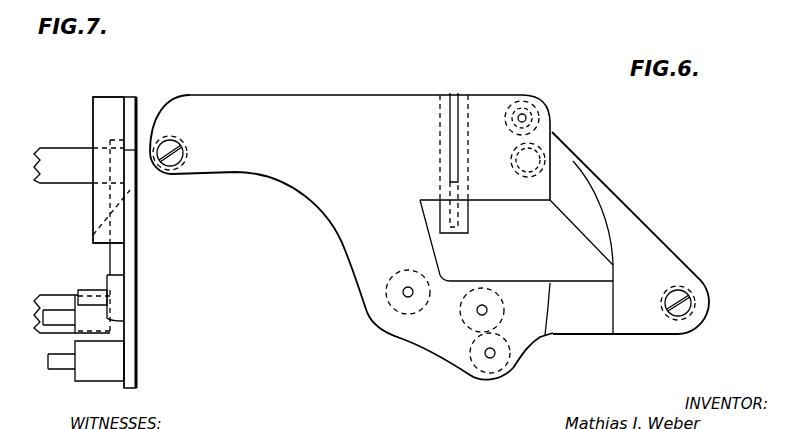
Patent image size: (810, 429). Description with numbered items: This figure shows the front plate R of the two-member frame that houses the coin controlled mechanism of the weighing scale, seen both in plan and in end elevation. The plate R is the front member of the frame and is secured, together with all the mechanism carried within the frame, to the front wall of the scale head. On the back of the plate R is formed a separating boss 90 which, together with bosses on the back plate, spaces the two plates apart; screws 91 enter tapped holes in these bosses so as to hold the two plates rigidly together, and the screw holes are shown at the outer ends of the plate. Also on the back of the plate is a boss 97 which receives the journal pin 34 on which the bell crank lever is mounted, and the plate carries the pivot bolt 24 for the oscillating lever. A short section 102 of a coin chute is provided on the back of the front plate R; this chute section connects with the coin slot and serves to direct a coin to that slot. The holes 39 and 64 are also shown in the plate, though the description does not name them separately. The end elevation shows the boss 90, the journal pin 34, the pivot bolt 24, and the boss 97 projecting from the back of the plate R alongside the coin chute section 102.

In FIG. 7, the front plate R is at (137, 264).
In FIG. 6, the front plate R is at (429, 237).
In FIG. 7, the short section of coin chute 102 is at (113, 108).
In FIG. 6, the short section of coin chute 102 is at (471, 223).
In FIG. 7, the separating boss 90 is at (67, 157).
In FIG. 6, the separating boss 90 is at (534, 159).
In FIG. 7, the screws 91 is at (55, 295).
In FIG. 7, the journal pin 34 is at (88, 288).
In FIG. 6, the journal pin 34 is at (405, 292).
In FIG. 7, the boss 97 is at (115, 303).
In FIG. 6, the boss 97 is at (386, 316).
In FIG. 7, the shaft / hole 39 is at (53, 327).
In FIG. 6, the shaft / hole 39 is at (478, 312).
In FIG. 7, the pivot bolt 24 is at (65, 371).
In FIG. 6, the pivot bolt 24 is at (488, 357).
In FIG. 6, the hole 64 is at (528, 119).